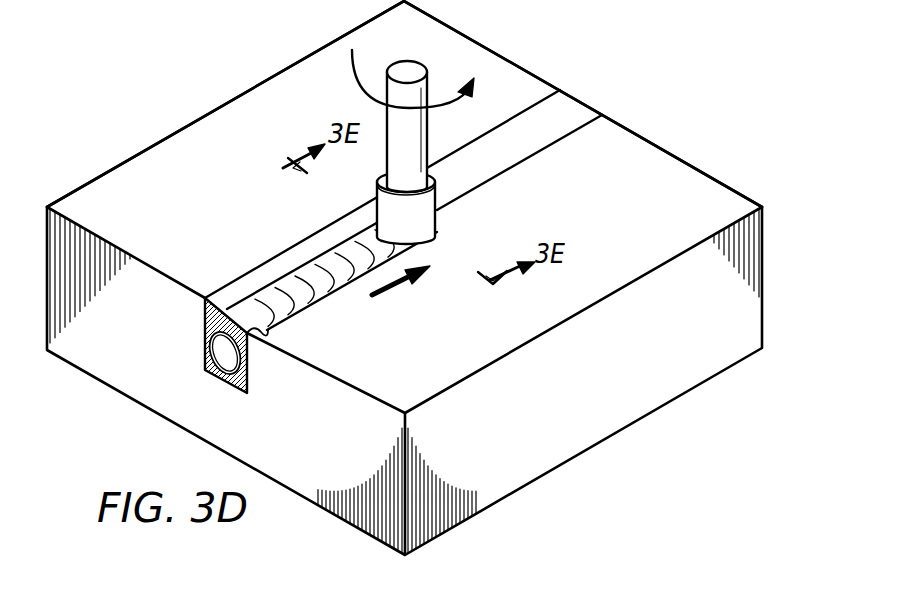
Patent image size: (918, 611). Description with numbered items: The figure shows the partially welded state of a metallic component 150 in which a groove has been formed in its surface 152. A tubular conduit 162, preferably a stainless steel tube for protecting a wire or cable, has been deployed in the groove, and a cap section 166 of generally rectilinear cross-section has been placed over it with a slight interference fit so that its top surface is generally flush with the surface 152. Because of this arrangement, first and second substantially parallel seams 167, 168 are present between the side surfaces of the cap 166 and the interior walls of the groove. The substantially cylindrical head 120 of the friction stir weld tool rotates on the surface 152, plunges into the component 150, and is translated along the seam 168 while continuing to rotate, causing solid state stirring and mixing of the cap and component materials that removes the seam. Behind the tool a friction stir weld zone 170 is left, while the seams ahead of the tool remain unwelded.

The metallic component 150 is at (752, 318).
The surface 152 is at (668, 163).
The first seam 167 is at (538, 103).
The second seam 168 is at (538, 152).
The friction stir weld zone 170 is at (293, 285).
The cap section 166 is at (212, 313).
The tubular conduit 162 is at (207, 361).
The cylindrical head 120 is at (437, 232).